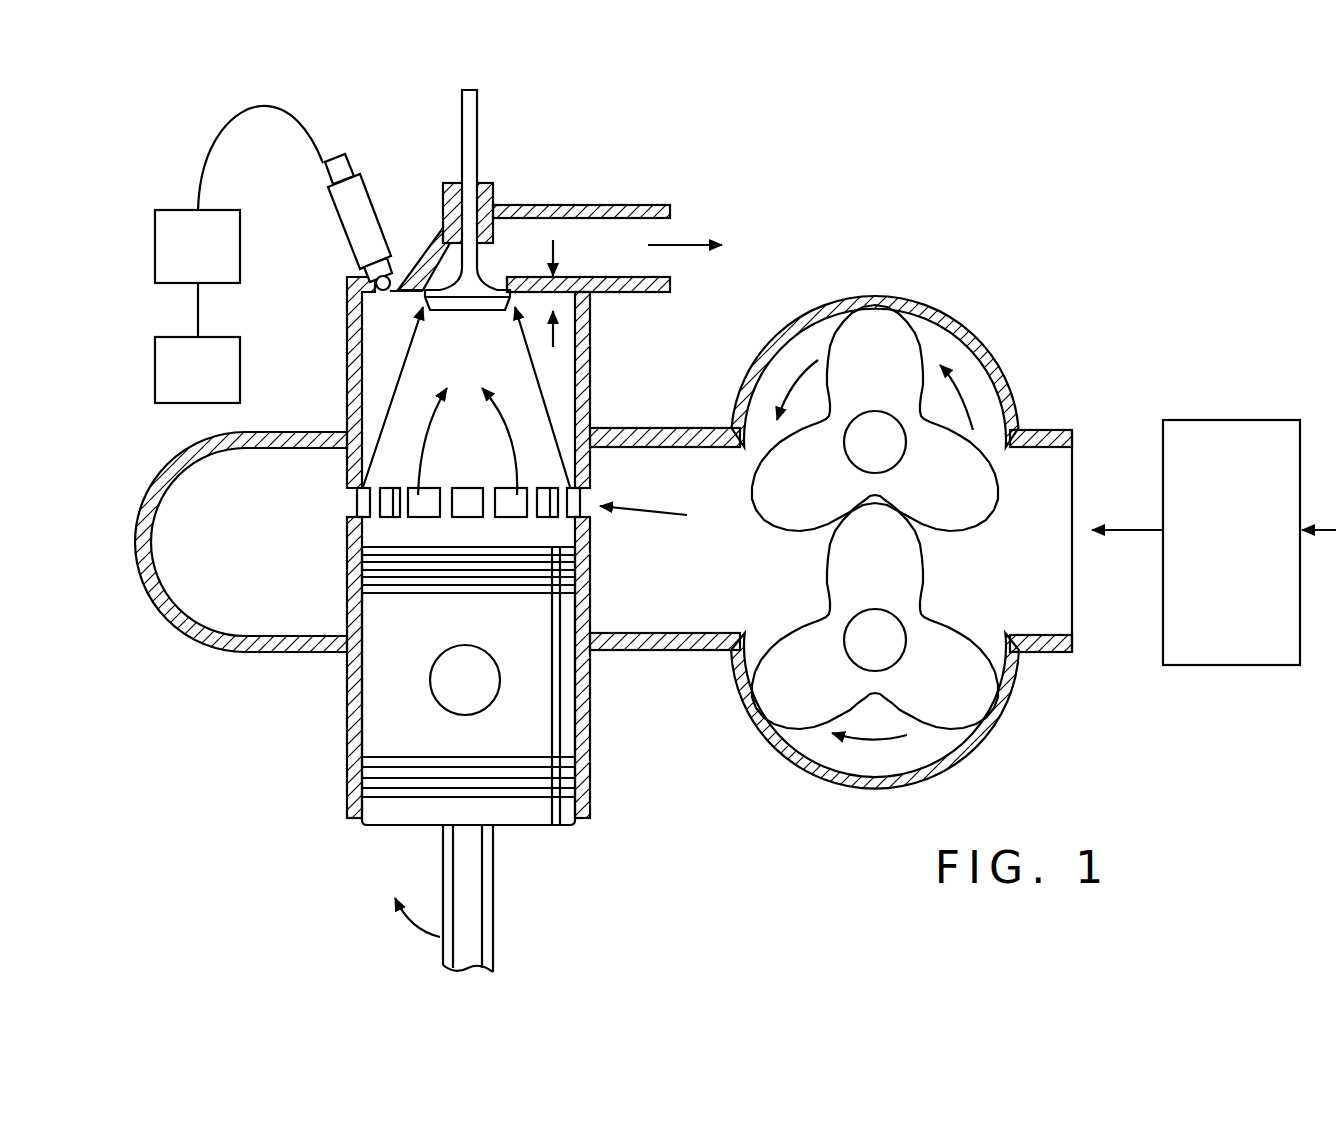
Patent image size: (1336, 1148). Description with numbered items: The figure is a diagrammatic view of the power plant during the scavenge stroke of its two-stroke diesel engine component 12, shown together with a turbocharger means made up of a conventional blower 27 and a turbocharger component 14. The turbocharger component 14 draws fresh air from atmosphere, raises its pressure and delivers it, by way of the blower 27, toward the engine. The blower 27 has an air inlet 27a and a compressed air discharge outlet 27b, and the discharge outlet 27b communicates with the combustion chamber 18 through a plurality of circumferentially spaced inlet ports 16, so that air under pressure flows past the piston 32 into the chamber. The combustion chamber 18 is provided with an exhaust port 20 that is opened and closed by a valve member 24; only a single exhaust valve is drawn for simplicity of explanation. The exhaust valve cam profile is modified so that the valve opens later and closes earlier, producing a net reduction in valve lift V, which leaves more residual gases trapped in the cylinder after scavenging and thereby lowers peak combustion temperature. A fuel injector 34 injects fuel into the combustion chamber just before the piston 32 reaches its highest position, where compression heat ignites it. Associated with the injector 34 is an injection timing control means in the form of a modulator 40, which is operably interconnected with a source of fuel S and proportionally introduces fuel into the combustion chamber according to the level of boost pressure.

The two-stroke diesel engine component 12 is at (588, 200).
The turbocharger component 14 is at (965, 305).
The inlet ports 16 is at (418, 490).
The combustion chamber 18 is at (468, 523).
The exhaust port 20 is at (506, 285).
The valve member 24 is at (472, 110).
The blower 27 is at (220, 652).
The air inlet 27a is at (1040, 448).
The compressed air discharge outlet 27b is at (595, 518).
The piston 32 is at (372, 737).
The fuel injector 34 is at (375, 212).
The modulator 40 is at (163, 225).
The source of fuel S is at (228, 372).
The valve lift V is at (553, 300).